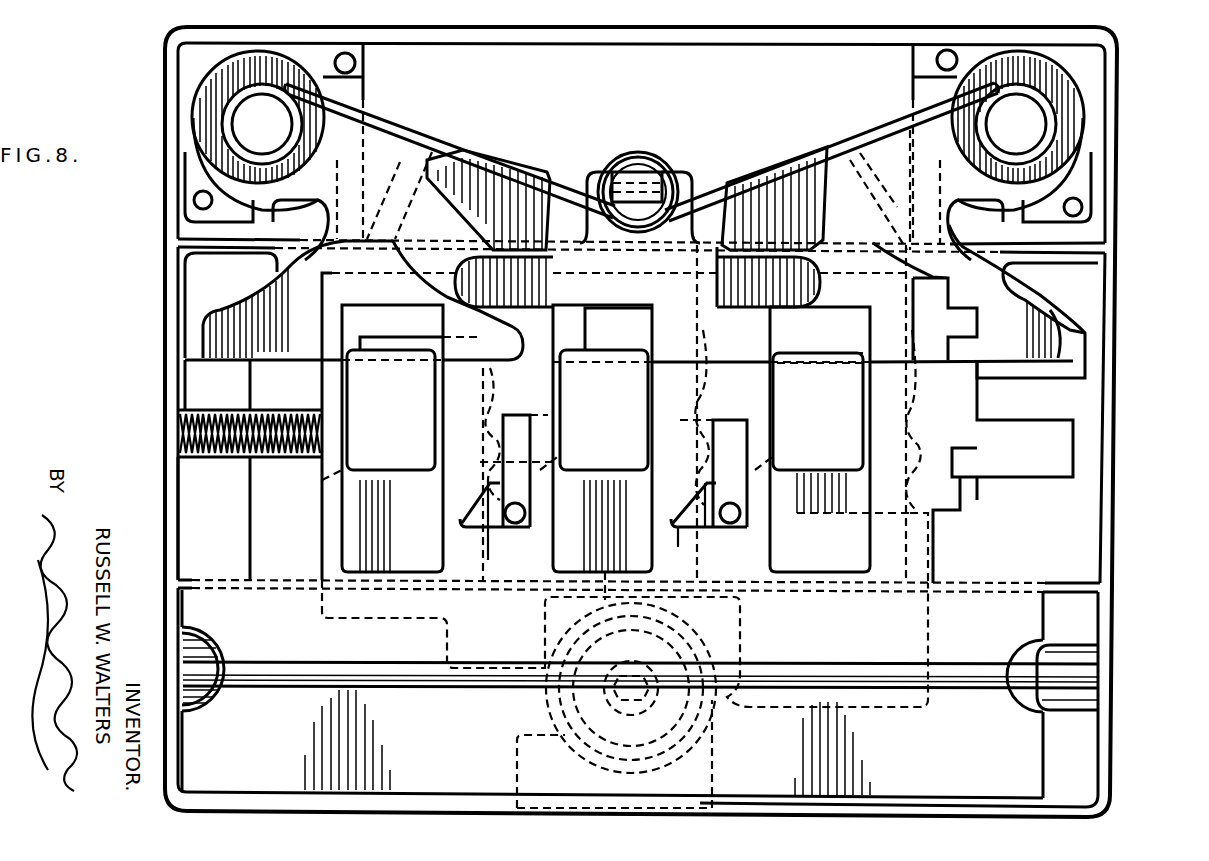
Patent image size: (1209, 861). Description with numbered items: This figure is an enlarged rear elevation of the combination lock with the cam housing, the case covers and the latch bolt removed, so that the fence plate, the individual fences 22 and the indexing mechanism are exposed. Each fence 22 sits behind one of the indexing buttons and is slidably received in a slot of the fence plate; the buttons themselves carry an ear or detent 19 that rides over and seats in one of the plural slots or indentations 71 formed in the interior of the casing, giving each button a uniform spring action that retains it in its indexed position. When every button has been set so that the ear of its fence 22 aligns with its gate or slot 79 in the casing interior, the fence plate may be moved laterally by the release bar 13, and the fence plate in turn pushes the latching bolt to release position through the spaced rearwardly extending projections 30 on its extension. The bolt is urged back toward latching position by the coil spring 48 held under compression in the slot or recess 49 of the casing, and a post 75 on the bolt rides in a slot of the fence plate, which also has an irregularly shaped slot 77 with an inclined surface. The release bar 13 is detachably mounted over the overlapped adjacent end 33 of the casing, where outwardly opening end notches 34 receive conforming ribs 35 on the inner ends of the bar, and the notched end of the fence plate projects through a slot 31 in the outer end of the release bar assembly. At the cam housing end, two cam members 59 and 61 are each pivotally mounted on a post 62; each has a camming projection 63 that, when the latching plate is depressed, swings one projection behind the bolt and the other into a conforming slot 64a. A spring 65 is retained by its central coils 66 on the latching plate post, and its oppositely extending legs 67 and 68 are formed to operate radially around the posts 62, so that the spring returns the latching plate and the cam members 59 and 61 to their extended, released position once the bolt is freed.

The release bar 13 is at (1120, 661).
The ear or detent 19 is at (484, 482).
The fence 22 is at (389, 423).
The rearwardly extending projections 30 is at (963, 323).
The slot 31 is at (712, 812).
The overlapped adjacent end of the casing 33 is at (462, 744).
The end notches 34 is at (216, 696).
The ribs 35 is at (196, 642).
The coil spring 48 is at (222, 462).
The slot or recess 49 is at (240, 462).
The cam member 59 is at (528, 151).
The cam member 61 is at (780, 155).
The post 62 is at (276, 137).
The camming projection 63 is at (249, 342).
The conforming slot 64a is at (1067, 355).
The spring 65 is at (410, 129).
The central coils 66 is at (660, 155).
The leg of the spring 67 is at (200, 96).
The leg of the spring 68 is at (1052, 100).
The slots or indentations 71 is at (496, 412).
The post 75 is at (730, 523).
The irregularly shaped slot 77 is at (740, 632).
The gate or slot 79 is at (318, 483).